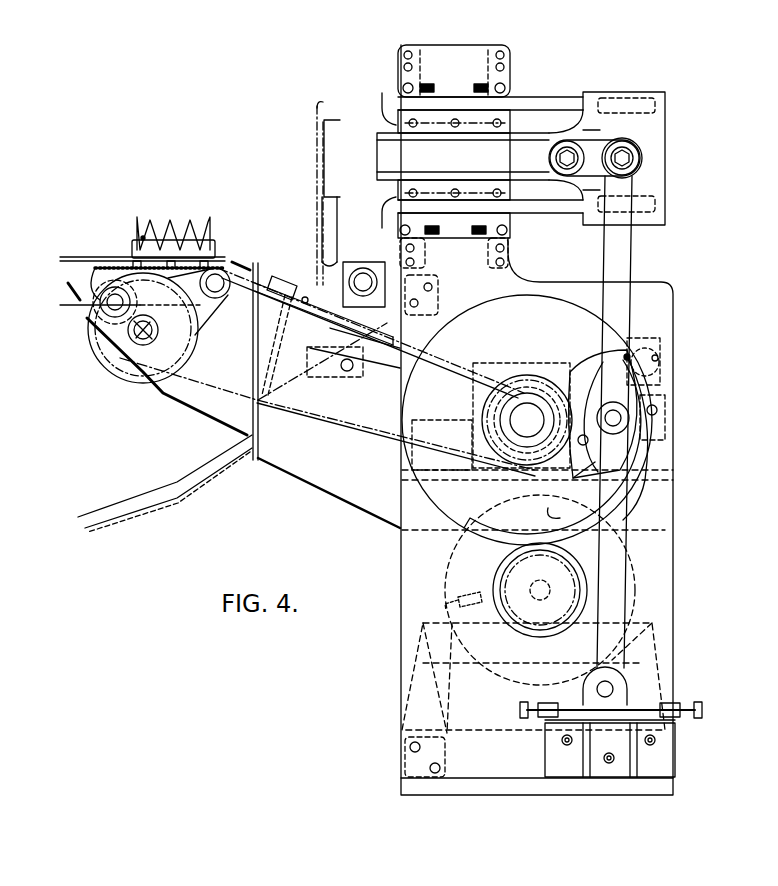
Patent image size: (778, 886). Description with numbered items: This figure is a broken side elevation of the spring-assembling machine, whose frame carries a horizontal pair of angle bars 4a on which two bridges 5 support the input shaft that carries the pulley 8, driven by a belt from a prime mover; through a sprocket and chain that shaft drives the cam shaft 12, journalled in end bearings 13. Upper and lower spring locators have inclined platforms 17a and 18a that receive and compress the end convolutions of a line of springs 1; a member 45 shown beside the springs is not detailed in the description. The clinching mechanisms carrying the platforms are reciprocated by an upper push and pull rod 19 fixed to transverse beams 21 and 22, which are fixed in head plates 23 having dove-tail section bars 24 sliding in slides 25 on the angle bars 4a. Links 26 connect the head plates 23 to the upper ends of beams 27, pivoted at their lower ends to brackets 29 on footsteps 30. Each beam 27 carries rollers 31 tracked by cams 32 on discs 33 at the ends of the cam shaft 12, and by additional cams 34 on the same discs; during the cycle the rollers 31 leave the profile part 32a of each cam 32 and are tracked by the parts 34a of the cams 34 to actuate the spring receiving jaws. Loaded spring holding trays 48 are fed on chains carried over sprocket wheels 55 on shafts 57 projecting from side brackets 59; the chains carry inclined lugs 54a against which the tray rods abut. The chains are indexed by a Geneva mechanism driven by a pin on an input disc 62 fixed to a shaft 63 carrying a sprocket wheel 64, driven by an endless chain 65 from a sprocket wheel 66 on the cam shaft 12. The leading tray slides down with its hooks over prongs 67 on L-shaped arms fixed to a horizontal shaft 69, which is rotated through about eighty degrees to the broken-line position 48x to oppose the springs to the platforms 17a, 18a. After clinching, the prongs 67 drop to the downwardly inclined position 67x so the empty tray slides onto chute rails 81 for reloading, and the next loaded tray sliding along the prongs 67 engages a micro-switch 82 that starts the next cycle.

The spring 1 is at (188, 232).
The angle bars 4a is at (404, 758).
The bridges 5 is at (417, 669).
The pulley 8 is at (627, 590).
The cam shaft 12 is at (527, 420).
The end bearings 13 is at (145, 234).
The inclined platform 17a is at (381, 110).
The inclined platform 18a is at (381, 221).
The upper push and pull rod 19 is at (530, 97).
The transverse beam 21 is at (603, 93).
The transverse beam 22 is at (648, 225).
The head plate 23 is at (632, 158).
The dove-tail section bar 24 is at (578, 158).
The slide 25 is at (403, 178).
The link 26 is at (607, 158).
The beam 27 is at (606, 248).
The bracket 29 is at (617, 683).
The footstep 30 is at (581, 750).
The roller 31 is at (613, 410).
The cam 32 is at (592, 414).
The profile part 32a is at (588, 462).
The disc 33 is at (641, 474).
The additional cam 34 is at (527, 420).
The profile part 34a is at (552, 508).
The spring housing 45 is at (213, 251).
The spring holding tray 48 is at (465, 595).
The tray transferred position 48x is at (330, 119).
The lug 54a is at (78, 284).
The sprocket wheel 55 is at (118, 264).
The shaft 57 is at (103, 305).
The side bracket 59 is at (215, 408).
The input disc 62 is at (301, 290).
The shaft 63 is at (160, 332).
The sprocket wheel 64 is at (118, 372).
The endless chain 65 is at (350, 425).
The sprocket wheel 66 is at (571, 392).
The prong 67 is at (315, 110).
The downwardly inclined position 67x is at (288, 383).
The horizontal shaft 69 is at (362, 269).
The chute rail 81 is at (272, 326).
The micro-switch 82 is at (281, 279).